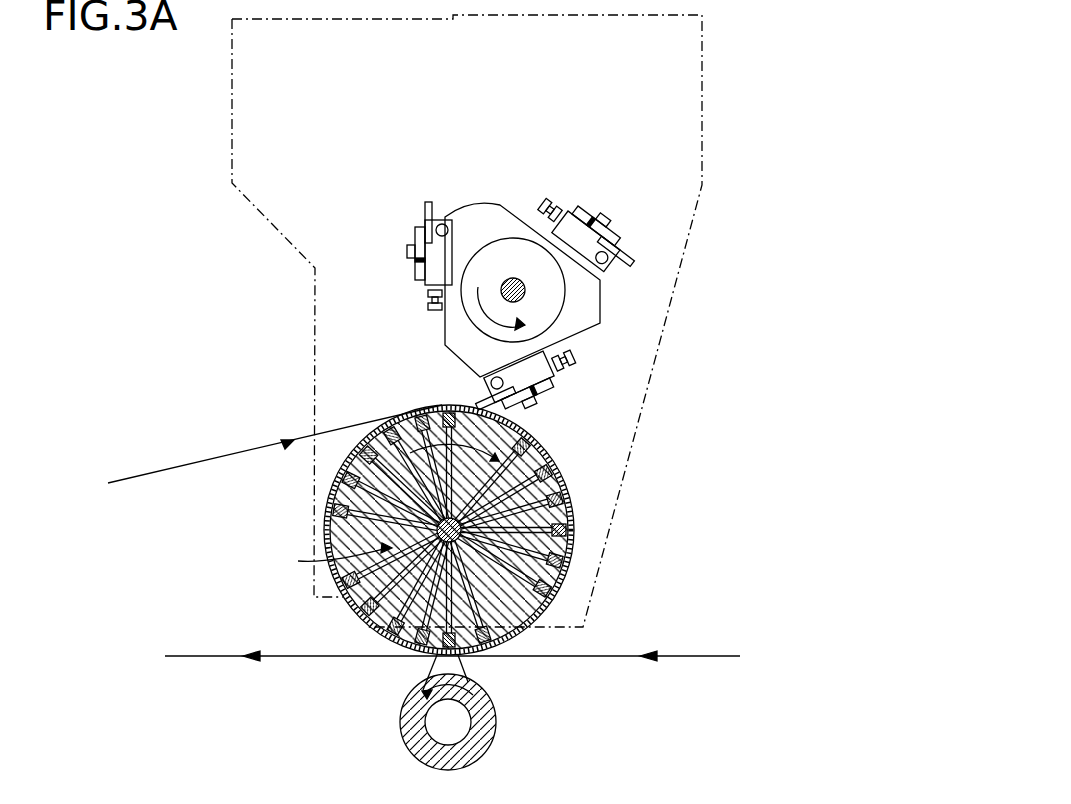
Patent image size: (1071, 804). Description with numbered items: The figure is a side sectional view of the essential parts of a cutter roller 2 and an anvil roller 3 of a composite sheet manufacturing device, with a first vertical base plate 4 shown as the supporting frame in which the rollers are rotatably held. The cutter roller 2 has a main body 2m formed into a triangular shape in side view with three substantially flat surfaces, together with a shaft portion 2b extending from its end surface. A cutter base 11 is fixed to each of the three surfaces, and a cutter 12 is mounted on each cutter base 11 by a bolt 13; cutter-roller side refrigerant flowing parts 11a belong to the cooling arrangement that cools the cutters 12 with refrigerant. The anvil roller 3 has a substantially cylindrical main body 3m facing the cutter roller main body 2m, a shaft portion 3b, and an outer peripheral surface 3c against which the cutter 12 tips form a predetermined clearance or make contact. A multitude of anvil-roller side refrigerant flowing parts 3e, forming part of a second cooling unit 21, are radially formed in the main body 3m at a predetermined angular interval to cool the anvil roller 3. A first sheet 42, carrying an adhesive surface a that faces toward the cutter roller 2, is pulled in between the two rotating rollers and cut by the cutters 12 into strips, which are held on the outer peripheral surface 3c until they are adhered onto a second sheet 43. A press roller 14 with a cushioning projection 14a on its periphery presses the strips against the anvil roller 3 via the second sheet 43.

The cutter roller 2 is at (600, 290).
The shaft portion 2b is at (525, 294).
The main body 2m is at (497, 220).
The anvil roller 3 is at (473, 555).
The shaft portion 3b is at (437, 527).
The outer peripheral surface 3c is at (568, 563).
The anvil-roller side refrigerant flowing parts 3e is at (562, 527).
The main body 3m is at (543, 612).
The first vertical base plate 4 is at (702, 99).
The cutter base 11 is at (447, 250).
The cutter-roller side refrigerant flowing parts 11a is at (445, 217).
The cutter 12 is at (423, 212).
The bolt 13 is at (407, 250).
The press roller 14 is at (483, 745).
The cushioning projection 14a is at (453, 667).
The second cooling unit 21 is at (326, 559).
The first sheet 42 is at (157, 471).
The second sheet 43 is at (713, 657).
The adhesive surface a is at (223, 457).